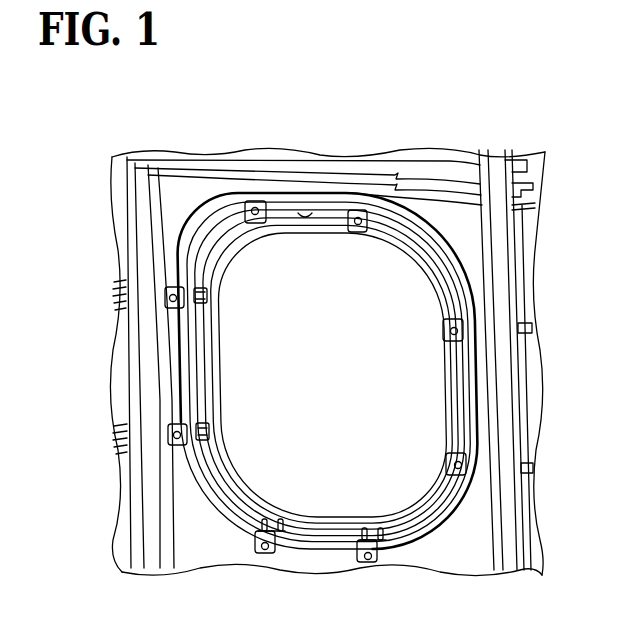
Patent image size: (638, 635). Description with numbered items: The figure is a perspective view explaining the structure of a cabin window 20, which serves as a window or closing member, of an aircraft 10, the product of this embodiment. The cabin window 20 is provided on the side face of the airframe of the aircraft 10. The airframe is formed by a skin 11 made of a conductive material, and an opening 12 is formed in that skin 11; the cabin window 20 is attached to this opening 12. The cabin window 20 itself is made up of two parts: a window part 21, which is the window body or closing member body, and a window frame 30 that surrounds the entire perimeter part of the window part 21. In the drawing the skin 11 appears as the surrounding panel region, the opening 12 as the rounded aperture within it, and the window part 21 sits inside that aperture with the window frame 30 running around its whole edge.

The aircraft 10 is at (150, 143).
The skin 11 is at (190, 180).
The opening 12 is at (315, 213).
The cabin window 20 is at (330, 503).
The window part 21 is at (250, 487).
The window frame 30 is at (283, 549).